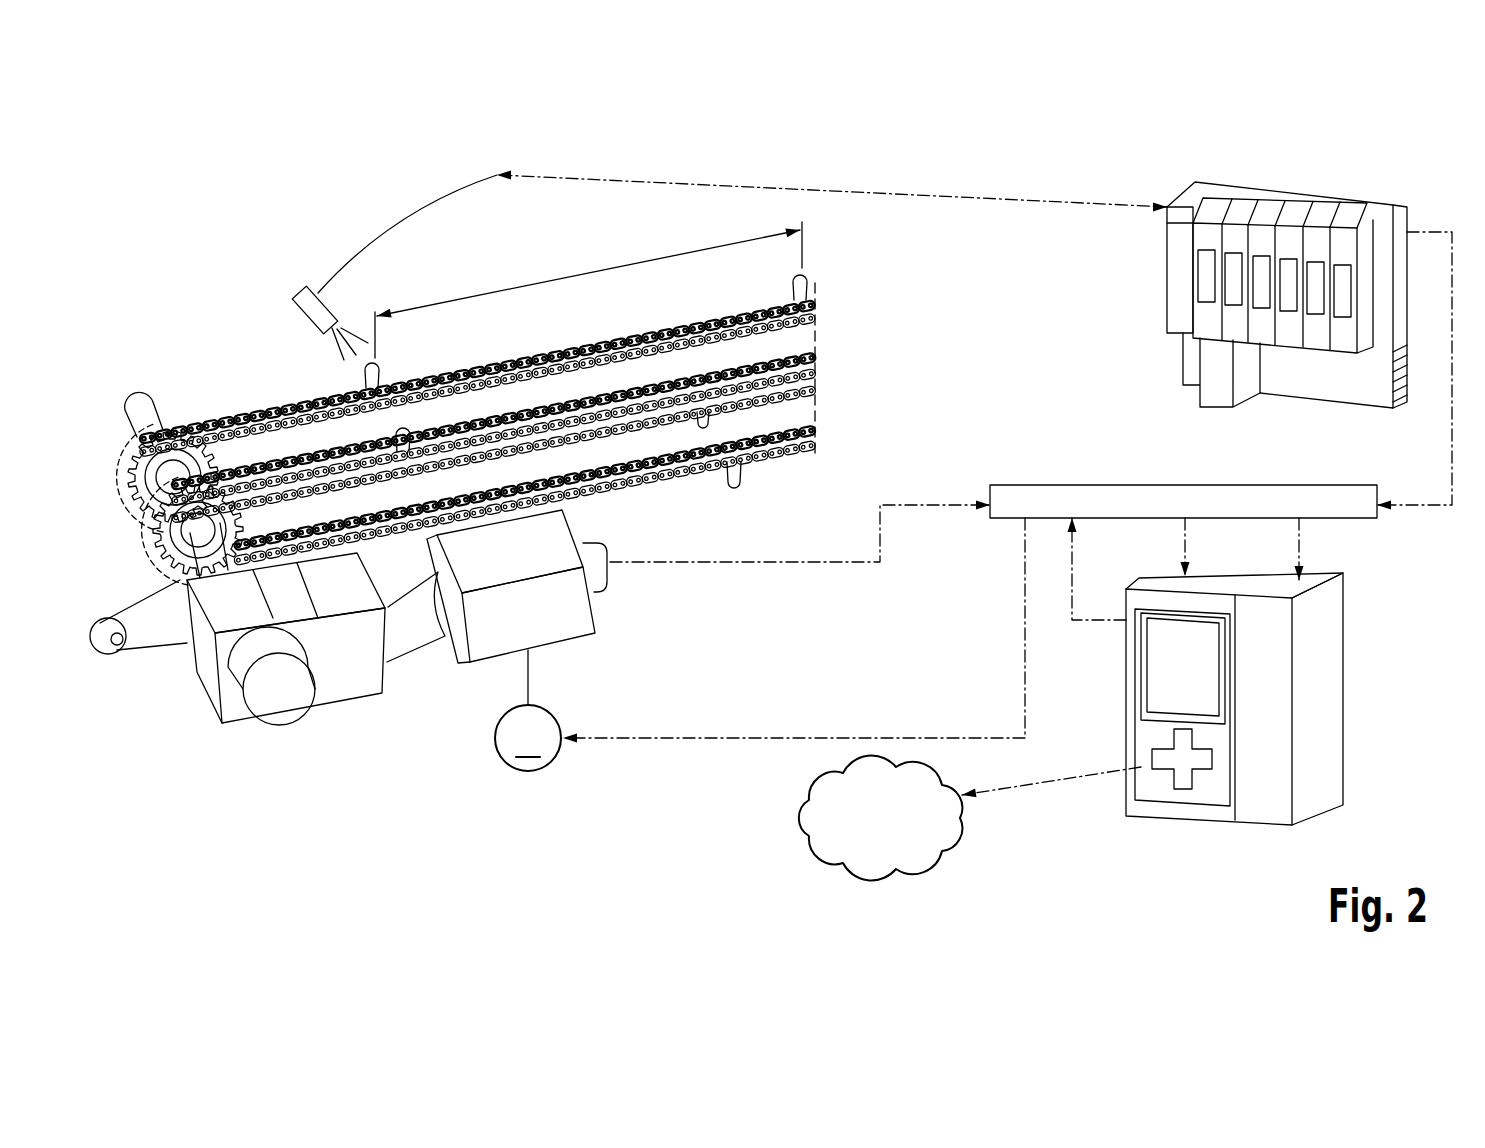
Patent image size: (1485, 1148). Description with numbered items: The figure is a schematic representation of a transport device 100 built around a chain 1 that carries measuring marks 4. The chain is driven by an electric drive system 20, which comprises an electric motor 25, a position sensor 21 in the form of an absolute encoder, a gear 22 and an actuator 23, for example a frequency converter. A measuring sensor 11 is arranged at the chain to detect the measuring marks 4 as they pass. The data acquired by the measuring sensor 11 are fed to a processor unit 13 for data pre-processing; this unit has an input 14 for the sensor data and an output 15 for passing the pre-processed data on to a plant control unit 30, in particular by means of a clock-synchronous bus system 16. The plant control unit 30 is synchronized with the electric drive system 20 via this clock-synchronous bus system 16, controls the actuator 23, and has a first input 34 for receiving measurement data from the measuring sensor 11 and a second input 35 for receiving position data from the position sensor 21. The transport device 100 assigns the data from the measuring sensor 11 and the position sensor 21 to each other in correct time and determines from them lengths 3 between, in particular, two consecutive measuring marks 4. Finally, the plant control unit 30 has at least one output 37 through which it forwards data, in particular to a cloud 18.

The transport device 100 is at (372, 158).
The chain 1 is at (697, 465).
The lengths 3 is at (588, 270).
The measuring marks 4 is at (362, 378).
The measuring sensor 11 is at (302, 290).
The processor unit 13 is at (1293, 210).
The input 14 is at (1165, 205).
The output 15 is at (1408, 233).
The clock-synchronous bus system 16 is at (1185, 485).
The cloud 18 is at (927, 840).
The electric drive system 20 is at (435, 784).
The position sensor 21 is at (600, 577).
The gear 22 is at (277, 700).
The actuator 23 is at (528, 772).
The electric motor 25 is at (570, 630).
The plant control unit 30 is at (1322, 727).
The first input 34 is at (1318, 574).
The second input 35 is at (1162, 572).
The output 37 is at (1148, 784).